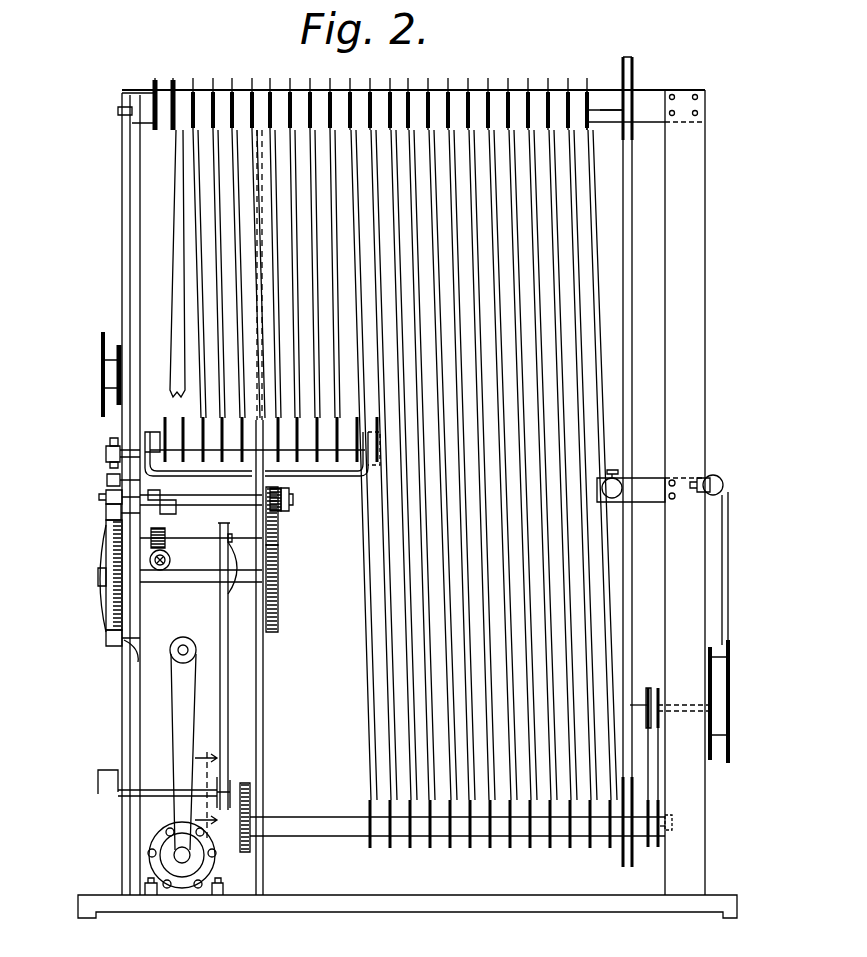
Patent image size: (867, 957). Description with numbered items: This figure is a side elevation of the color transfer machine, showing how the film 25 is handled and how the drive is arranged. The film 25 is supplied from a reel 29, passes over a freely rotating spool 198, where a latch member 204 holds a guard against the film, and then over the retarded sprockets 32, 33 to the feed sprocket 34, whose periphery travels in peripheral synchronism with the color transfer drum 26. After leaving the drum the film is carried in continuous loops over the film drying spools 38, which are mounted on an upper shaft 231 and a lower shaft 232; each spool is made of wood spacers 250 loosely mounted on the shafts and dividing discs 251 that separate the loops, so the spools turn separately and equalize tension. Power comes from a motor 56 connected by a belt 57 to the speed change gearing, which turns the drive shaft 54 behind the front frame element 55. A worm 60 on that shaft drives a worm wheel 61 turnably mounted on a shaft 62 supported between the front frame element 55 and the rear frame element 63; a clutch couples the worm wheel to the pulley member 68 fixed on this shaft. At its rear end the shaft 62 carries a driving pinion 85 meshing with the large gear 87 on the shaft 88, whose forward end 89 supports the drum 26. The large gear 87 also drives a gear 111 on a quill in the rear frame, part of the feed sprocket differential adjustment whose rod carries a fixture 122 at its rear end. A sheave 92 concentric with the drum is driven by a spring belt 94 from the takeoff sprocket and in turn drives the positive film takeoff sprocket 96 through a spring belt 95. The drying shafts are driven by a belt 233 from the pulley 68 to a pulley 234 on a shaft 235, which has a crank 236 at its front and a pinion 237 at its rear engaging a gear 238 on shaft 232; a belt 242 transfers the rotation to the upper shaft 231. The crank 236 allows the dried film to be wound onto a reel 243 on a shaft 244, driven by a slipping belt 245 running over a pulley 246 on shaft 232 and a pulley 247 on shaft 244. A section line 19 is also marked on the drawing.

The section line 19 is at (212, 789).
The film 25 is at (185, 168).
The color transfer drum 26 is at (112, 607).
The reel 29 is at (100, 350).
The sprocket 32 is at (110, 464).
The sprocket 33 is at (107, 480).
The feed sprocket 34 is at (107, 496).
The film drying spools 38 is at (500, 90).
The drive shaft 54 is at (162, 570).
The front frame element 55 is at (137, 699).
The motor 56 is at (168, 862).
The belt 57 is at (172, 720).
The worm 60 is at (171, 561).
The worm wheel 61 is at (166, 530).
The shaft 62 is at (244, 542).
The rear frame element 63 is at (259, 858).
The pulley member 68 is at (236, 584).
The driving pinion 85 is at (279, 538).
The large gear 87 is at (274, 604).
The shaft 88 is at (197, 577).
The forward end 89 is at (98, 579).
The sheave 92 is at (106, 547).
The spring belt 94 is at (105, 513).
The spring belt 95 is at (138, 653).
The positive film takeoff sprocket 96 is at (110, 642).
The gear 111 is at (285, 506).
The fixture 122 is at (292, 504).
The spool 198 is at (106, 456).
The latch member 204 is at (108, 442).
The shaft 231 is at (598, 108).
The shaft 232 is at (333, 836).
The belt 233 is at (222, 707).
The pulley 234 is at (232, 785).
The shaft 235 is at (155, 796).
The crank 236 is at (97, 786).
The pinion 237 is at (251, 792).
The gear 238 is at (252, 830).
The belt 242 is at (668, 392).
The reel 243 is at (730, 652).
The shaft 244 is at (660, 690).
The belt 245 is at (655, 770).
The pulley 246 is at (656, 838).
The pulley 247 is at (645, 690).
The wood spacers 250 is at (163, 95).
The dividing discs 251 is at (200, 93).